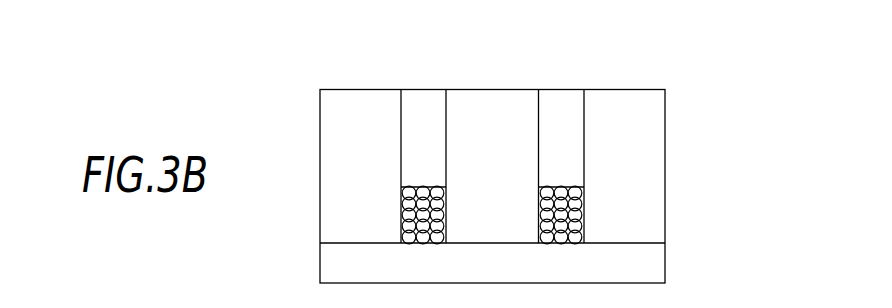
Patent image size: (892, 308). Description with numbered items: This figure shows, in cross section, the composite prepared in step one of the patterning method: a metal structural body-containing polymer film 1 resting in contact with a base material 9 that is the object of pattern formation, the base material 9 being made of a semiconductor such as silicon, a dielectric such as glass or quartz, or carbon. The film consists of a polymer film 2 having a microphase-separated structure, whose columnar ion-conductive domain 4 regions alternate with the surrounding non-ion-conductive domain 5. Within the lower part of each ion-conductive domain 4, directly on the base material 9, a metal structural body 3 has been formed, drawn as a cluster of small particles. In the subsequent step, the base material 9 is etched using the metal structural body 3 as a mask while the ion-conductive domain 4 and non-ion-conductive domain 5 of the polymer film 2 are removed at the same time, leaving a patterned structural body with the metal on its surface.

The metal structural body-containing polymer film 1 is at (752, 91).
The polymer film having a microphase-separated structure 2 is at (680, 91).
The metal structural body 3 is at (577, 225).
The ion-conductive domain 4 is at (563, 110).
The non-ion-conductive domain 5 is at (490, 110).
The base material 9 is at (653, 268).